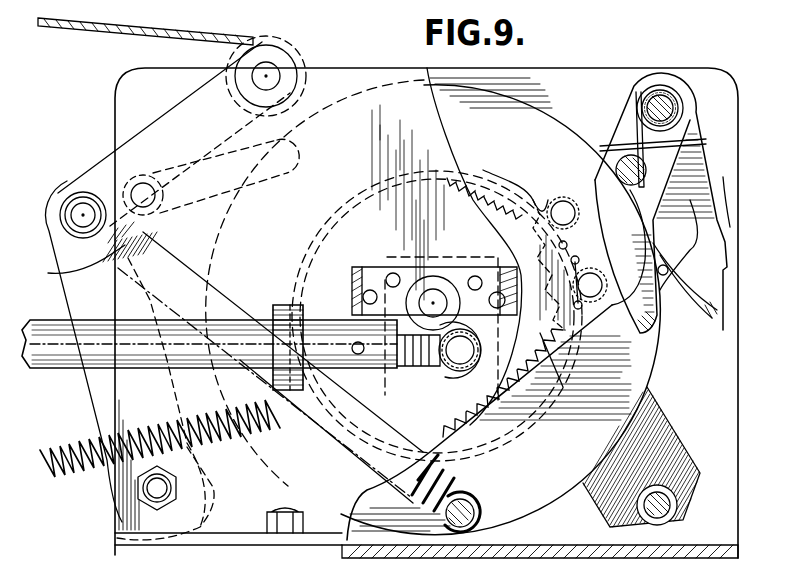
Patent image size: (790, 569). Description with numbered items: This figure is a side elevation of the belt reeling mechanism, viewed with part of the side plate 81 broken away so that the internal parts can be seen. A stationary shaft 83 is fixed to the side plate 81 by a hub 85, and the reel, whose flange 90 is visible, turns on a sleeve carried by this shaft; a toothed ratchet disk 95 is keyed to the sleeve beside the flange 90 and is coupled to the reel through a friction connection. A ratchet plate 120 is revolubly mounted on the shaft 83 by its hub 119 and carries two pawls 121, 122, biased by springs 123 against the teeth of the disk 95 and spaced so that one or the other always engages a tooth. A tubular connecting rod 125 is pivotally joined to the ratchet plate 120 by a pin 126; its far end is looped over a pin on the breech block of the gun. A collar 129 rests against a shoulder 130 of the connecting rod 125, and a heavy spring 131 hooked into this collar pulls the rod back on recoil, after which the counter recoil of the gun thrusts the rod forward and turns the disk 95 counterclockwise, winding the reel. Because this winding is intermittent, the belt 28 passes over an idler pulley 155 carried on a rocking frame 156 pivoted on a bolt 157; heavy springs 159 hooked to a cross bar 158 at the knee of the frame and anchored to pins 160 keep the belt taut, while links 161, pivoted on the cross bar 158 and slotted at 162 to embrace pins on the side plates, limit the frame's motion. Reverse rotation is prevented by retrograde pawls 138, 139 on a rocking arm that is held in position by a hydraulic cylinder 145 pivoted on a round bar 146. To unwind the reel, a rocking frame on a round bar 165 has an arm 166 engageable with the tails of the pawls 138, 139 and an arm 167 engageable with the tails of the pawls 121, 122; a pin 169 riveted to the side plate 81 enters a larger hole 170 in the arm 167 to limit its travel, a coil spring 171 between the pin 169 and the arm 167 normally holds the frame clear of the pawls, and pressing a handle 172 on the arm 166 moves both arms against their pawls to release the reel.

The belt 28 is at (187, 32).
The side plate 81 is at (426, 313).
The stationary shaft 83 is at (430, 300).
The hub 85 is at (362, 270).
The flange 90 is at (570, 505).
The ratchet disk 95 is at (503, 398).
The hub 119 is at (440, 260).
The ratchet plate 120 is at (544, 313).
The pawl 121 is at (596, 300).
The pawl 122 is at (533, 197).
The spring 123 is at (455, 182).
The tubular connecting rod 125 is at (60, 355).
The pin 126 is at (460, 352).
The collar 129 is at (287, 303).
The shoulder 130 is at (283, 320).
The heavy spring 131 is at (262, 447).
The retrograde pawl 138 is at (713, 323).
The retrograde pawl 139 is at (663, 217).
The cylinder 145 is at (660, 437).
The round bar 146 is at (668, 505).
The idler pulley 155 is at (287, 50).
The rocking frame 156 is at (65, 185).
The bolt 157 is at (147, 489).
The cross bar 158 is at (70, 216).
The heavy spring 159 is at (48, 273).
The pin 160 is at (482, 522).
The link 161 is at (100, 187).
The slot 162 is at (211, 191).
The round bar 165 is at (660, 100).
The arm 166 is at (690, 232).
The arm 167 is at (653, 317).
The pin 169 is at (617, 150).
The hole 170 is at (620, 184).
The coil spring 171 is at (700, 143).
The handle 172 is at (723, 177).